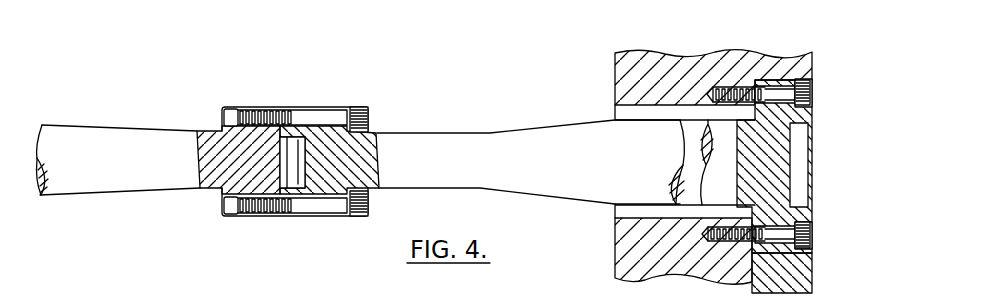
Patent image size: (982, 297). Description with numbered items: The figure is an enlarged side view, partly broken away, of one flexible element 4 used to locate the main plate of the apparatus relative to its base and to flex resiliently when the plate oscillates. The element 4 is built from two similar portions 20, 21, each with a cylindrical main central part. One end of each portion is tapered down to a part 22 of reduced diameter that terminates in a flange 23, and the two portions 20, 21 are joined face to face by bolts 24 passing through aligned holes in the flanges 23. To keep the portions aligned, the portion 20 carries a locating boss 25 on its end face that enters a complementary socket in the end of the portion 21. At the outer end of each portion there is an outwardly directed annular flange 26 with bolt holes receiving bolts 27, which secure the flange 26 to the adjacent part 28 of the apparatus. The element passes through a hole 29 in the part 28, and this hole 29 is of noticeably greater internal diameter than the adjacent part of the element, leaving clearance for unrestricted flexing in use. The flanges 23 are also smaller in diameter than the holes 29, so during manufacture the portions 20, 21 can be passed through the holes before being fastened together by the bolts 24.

The element 4 is at (440, 128).
The portion 20 is at (85, 142).
The portion 21 is at (467, 158).
The part of reduced diameter 22 is at (173, 148).
The flange 23 is at (318, 142).
The bolt 24 is at (310, 118).
The locating boss 25 is at (292, 152).
The annular flange 26 is at (787, 256).
The bolt 27 is at (770, 94).
The part of the apparatus 28 is at (790, 72).
The hole 29 is at (635, 111).